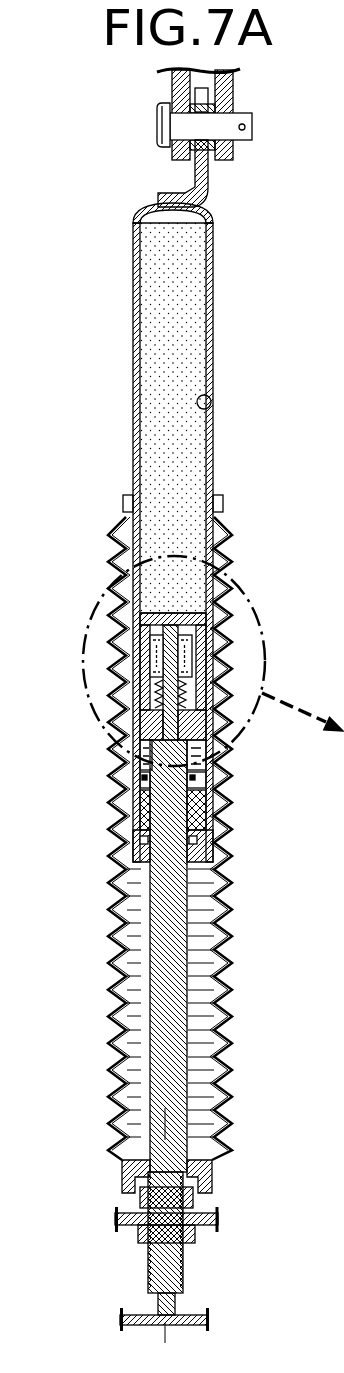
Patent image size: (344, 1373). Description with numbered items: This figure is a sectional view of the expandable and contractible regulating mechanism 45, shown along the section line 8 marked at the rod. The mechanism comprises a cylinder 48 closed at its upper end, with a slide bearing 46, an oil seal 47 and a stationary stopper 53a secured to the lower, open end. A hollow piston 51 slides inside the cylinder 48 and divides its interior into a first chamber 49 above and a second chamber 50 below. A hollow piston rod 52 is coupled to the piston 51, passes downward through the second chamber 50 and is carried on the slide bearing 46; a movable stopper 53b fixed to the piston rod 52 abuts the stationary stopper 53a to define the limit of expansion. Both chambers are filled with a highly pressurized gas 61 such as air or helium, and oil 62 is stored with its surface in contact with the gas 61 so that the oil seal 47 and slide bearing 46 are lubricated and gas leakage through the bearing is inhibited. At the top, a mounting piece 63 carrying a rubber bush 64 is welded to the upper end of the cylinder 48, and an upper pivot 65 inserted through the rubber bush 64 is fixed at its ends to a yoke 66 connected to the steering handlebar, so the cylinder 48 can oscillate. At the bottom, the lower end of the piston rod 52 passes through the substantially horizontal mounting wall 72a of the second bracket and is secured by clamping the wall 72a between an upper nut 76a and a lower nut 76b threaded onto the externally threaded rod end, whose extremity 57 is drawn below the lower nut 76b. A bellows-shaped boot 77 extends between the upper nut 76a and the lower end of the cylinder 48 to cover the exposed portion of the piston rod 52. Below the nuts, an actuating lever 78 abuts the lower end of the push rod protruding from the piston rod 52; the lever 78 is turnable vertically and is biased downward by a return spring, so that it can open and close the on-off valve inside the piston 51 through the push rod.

The section line 8- 8 is at (152, 1124).
The expandable and contractible regulating mechanism 45 is at (220, 268).
The slide bearing 46 is at (208, 861).
The oil seal 47 is at (200, 817).
The cylinder 48 is at (215, 368).
The first chamber 49 is at (211, 404).
The second chamber 50 is at (213, 732).
The hollow piston 51 is at (142, 668).
The hollow piston rod 52 is at (180, 913).
The stationary stopper 53a is at (203, 798).
The movable stopper 53b is at (140, 768).
The threaded rod end 57 is at (173, 1305).
The high-pressure gas 61 is at (190, 316).
The oil 62 is at (140, 712).
The mounting piece 63 is at (205, 183).
The rubber bush 64 is at (215, 102).
The upper pivot 65 is at (162, 132).
The yoke 66 is at (172, 96).
The mounting wall 72a is at (117, 1220).
The upper nut 76a is at (193, 1205).
The lower nut 76b is at (195, 1235).
The bellows-shaped boot 77 is at (235, 535).
The actuating lever 78 is at (135, 1315).